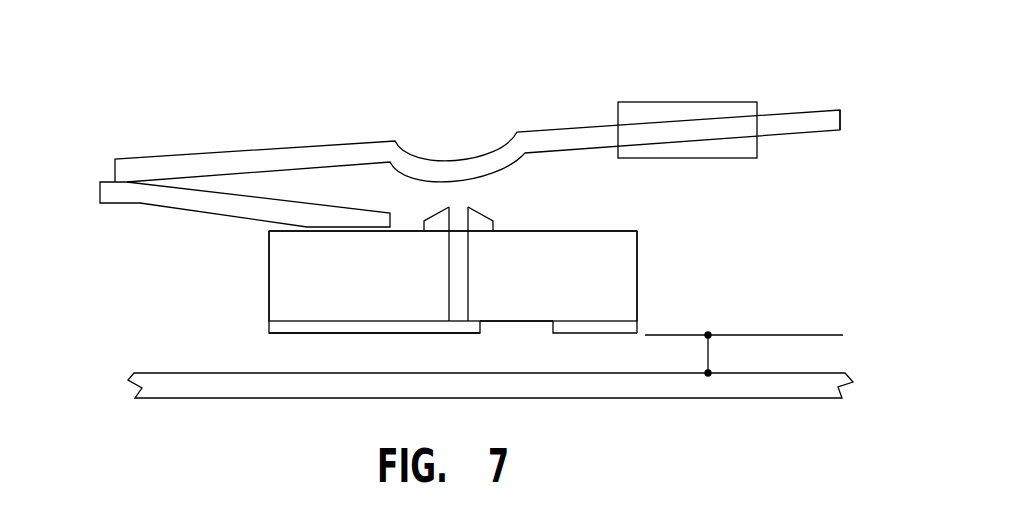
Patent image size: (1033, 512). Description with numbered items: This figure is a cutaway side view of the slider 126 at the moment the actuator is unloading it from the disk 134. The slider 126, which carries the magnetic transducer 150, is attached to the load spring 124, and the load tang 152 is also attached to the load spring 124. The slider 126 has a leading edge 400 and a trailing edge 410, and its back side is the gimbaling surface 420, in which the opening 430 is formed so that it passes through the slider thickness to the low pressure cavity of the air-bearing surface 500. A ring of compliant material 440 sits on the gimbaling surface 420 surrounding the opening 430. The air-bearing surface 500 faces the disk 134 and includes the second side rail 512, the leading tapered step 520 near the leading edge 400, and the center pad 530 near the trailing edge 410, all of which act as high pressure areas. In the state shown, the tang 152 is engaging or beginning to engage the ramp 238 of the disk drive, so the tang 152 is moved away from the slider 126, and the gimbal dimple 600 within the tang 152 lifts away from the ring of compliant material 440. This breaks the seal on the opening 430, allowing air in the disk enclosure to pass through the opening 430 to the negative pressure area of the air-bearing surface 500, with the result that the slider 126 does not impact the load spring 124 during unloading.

The load spring 124 is at (137, 199).
The slider 126 is at (276, 256).
The disk 134 is at (172, 389).
The magnetic transducer 150 is at (637, 333).
The load tang 152 is at (838, 121).
The ramp 238 is at (704, 106).
The leading edge 400 is at (268, 307).
The trailing edge 410 is at (638, 273).
The gimbaling surface 420 is at (597, 230).
The opening 430 is at (449, 298).
The ring of compliant material 440 is at (447, 209).
The air-bearing surface 500 is at (528, 323).
The second side rail 512 is at (437, 331).
The leading tapered step 520 is at (318, 335).
The center pad 530 is at (613, 335).
The gimbal dimple 600 is at (498, 166).